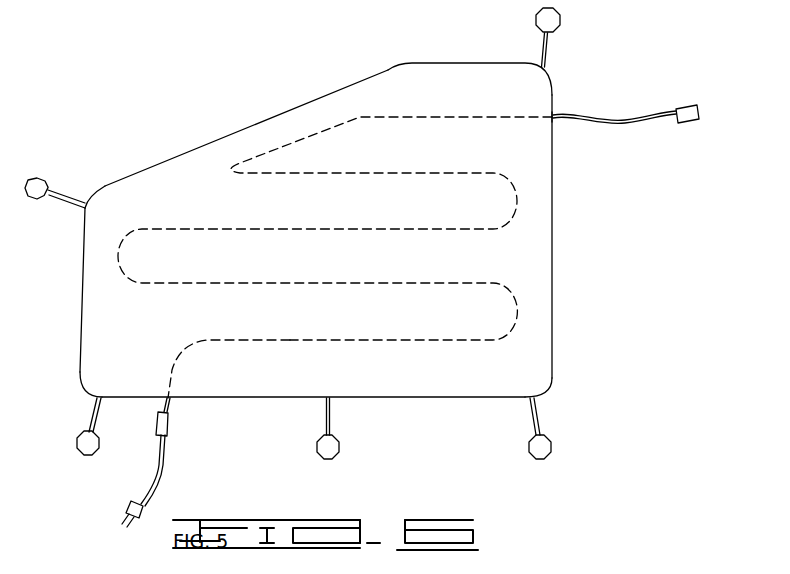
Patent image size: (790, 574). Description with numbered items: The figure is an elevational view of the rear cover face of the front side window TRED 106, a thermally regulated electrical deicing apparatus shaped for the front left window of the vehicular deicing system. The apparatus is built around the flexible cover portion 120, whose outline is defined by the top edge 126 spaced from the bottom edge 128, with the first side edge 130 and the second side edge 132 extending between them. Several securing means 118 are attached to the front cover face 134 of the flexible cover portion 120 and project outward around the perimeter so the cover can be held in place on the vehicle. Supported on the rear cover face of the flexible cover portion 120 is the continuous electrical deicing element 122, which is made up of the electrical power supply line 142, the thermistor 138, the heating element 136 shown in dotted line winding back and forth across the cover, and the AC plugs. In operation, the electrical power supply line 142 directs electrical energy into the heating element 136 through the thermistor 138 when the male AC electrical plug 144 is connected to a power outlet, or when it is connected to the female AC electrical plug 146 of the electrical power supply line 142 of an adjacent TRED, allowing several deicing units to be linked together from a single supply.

The front side window TRED 106 is at (441, 28).
The securing means 118 is at (55, 186).
The flexible cover portion 120 is at (343, 249).
The continuous electrical deicing element 122 is at (566, 104).
The top edge 126 is at (293, 107).
The bottom edge 128 is at (238, 400).
The first side edge 130 is at (78, 290).
The second side edge 132 is at (553, 195).
The front cover face 134 is at (377, 257).
The heating element 136 is at (290, 342).
The thermistor 138 is at (157, 415).
The electrical power supply line 142 is at (630, 122).
The male AC electrical plug 144 is at (127, 510).
The female AC electrical plug 146 is at (677, 108).